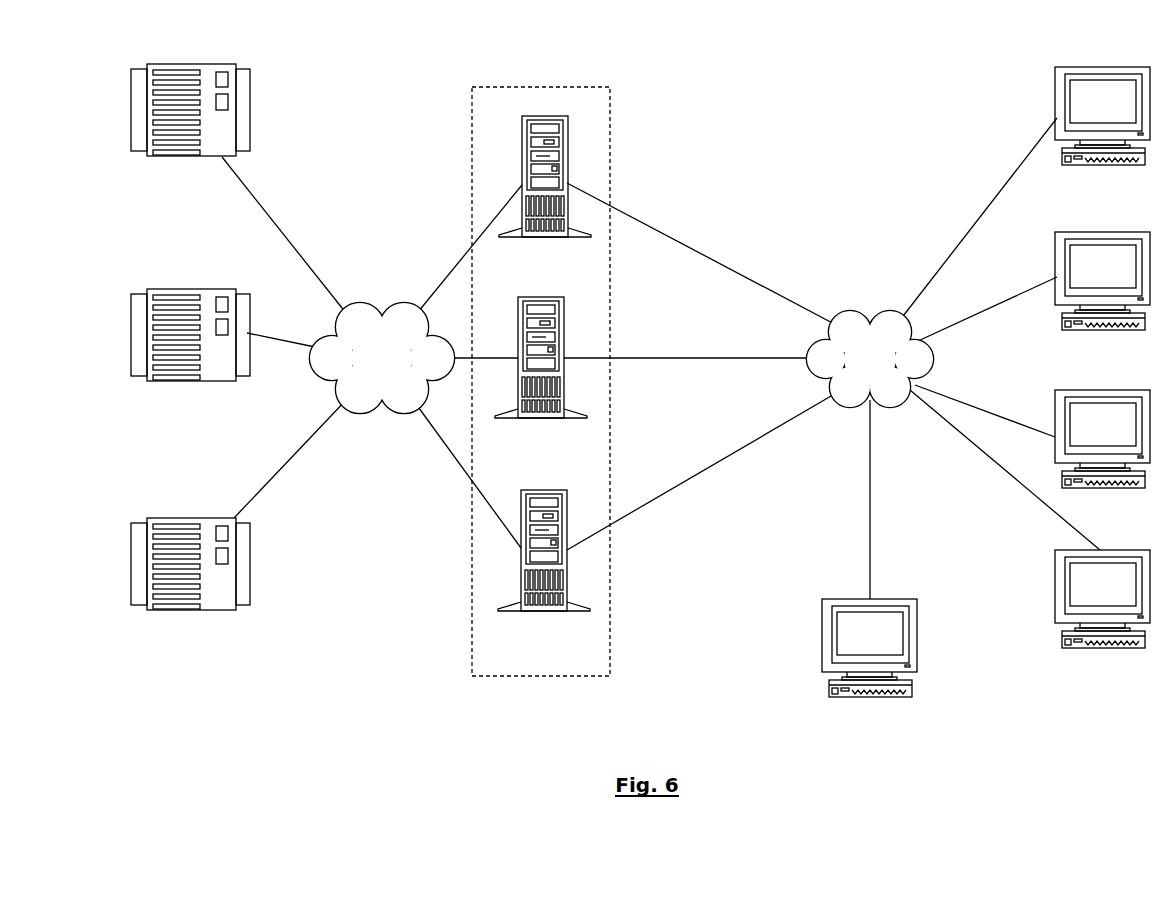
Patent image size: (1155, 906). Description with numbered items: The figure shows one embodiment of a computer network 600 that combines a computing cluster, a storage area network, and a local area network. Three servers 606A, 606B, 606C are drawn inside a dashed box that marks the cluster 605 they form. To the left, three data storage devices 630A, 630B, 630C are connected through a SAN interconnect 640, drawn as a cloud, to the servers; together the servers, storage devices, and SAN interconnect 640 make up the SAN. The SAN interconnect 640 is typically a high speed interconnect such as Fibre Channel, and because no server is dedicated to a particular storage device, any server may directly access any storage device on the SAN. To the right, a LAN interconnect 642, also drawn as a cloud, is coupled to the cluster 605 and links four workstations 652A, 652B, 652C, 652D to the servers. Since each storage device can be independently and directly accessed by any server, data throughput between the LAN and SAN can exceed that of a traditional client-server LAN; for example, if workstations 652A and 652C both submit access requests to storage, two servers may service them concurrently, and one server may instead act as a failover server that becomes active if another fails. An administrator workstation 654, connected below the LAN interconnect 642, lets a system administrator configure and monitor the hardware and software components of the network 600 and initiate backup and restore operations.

The computer network 600 is at (727, 74).
The cluster 605 is at (470, 637).
The server 606A is at (545, 192).
The server 606B is at (541, 372).
The server 606C is at (544, 566).
The data storage device 630A is at (190, 127).
The data storage device 630B is at (190, 351).
The data storage device 630C is at (190, 580).
The SAN interconnect 640 is at (366, 380).
The LAN interconnect 642 is at (854, 380).
The workstation 652A is at (1102, 130).
The workstation 652B is at (1102, 294).
The workstation 652C is at (1102, 453).
The workstation 652D is at (1102, 612).
The administrator workstation 654 is at (869, 662).